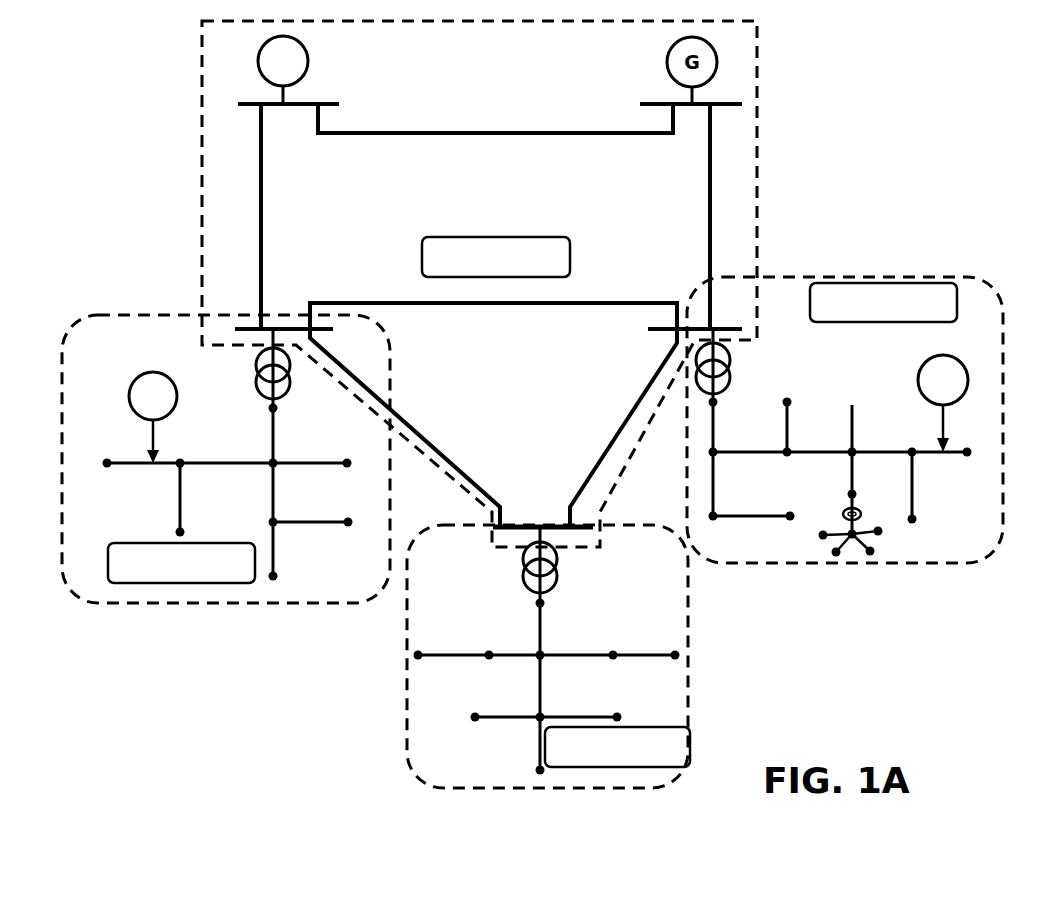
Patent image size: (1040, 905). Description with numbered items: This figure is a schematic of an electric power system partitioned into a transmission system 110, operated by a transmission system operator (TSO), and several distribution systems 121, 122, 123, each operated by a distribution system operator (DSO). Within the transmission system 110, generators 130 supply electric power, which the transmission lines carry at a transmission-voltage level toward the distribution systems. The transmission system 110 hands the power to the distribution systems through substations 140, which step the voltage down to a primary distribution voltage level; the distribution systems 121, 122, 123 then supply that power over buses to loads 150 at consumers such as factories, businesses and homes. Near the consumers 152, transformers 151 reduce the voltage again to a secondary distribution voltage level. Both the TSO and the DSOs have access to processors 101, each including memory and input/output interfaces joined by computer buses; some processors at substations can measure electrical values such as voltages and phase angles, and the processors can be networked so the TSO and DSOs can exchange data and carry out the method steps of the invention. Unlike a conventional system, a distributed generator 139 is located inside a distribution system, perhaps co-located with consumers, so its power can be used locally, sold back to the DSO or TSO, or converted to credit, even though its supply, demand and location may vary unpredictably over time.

The transmission system 110 is at (757, 120).
The generator 130 is at (302, 78).
The processor 101 is at (518, 235).
The distribution system 121 is at (251, 605).
The distribution system 122 is at (407, 755).
The distribution system 123 is at (833, 565).
The distributed generator (DG) 139 is at (967, 363).
The substation 140 is at (262, 395).
The load 150 is at (852, 405).
The transformer 151 is at (843, 513).
The consumer 152 is at (870, 551).